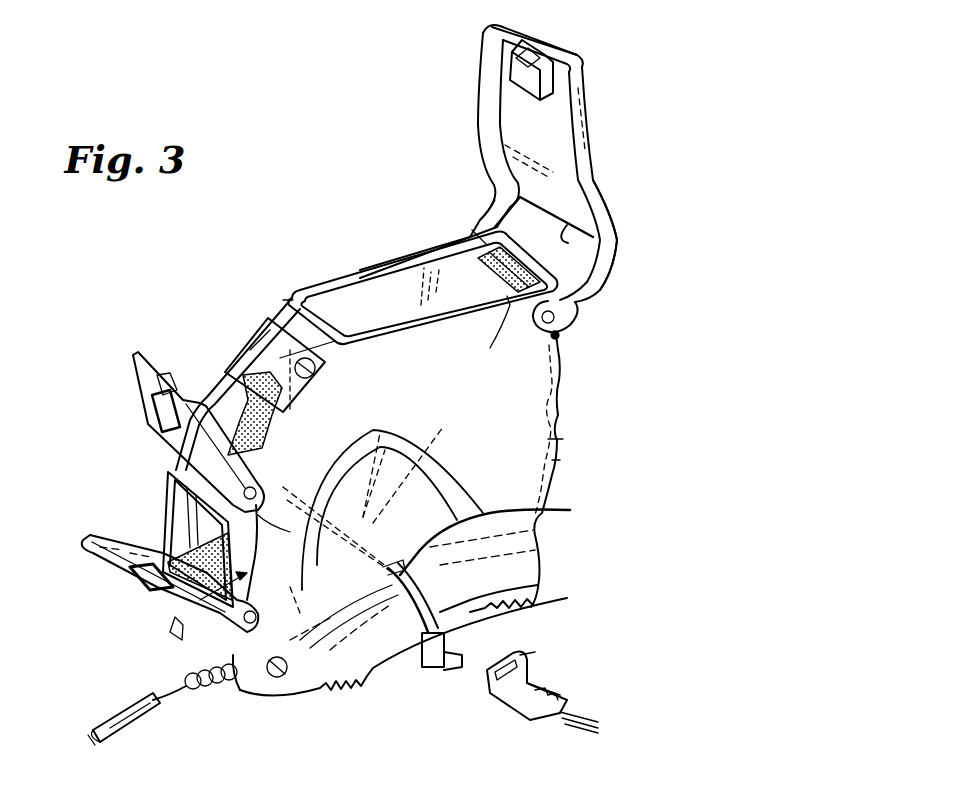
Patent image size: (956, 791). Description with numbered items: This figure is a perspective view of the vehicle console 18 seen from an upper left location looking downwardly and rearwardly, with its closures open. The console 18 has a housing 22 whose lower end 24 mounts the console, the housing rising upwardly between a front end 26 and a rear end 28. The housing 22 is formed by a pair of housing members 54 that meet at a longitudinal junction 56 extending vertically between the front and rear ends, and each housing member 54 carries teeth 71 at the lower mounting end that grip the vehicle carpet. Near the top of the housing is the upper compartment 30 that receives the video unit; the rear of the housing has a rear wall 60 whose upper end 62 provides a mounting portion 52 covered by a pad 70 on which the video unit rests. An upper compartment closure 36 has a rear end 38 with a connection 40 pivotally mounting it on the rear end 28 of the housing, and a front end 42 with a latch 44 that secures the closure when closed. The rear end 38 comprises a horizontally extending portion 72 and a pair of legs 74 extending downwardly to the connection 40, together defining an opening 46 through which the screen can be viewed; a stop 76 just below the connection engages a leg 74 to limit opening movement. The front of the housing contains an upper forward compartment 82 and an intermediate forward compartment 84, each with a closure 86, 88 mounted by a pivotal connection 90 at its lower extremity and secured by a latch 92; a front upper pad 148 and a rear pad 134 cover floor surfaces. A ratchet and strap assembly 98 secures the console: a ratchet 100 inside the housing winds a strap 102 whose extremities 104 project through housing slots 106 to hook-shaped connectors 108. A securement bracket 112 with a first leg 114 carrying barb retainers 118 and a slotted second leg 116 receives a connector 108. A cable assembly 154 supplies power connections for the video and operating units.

The vehicle console 18 is at (289, 215).
The housing 22 is at (525, 369).
The lower end 24 is at (368, 650).
The front end 26 is at (173, 613).
The rear end 28 is at (545, 443).
The upper compartment 30 is at (363, 282).
The upper compartment closure 36 is at (593, 147).
The rear end 38 is at (614, 242).
The connection 40 is at (556, 317).
The front end 42 is at (575, 60).
The latch 44 is at (523, 60).
The opening 46 is at (578, 226).
The mounting portion 52 is at (480, 262).
The housing members 54 is at (284, 296).
The longitudinal junction 56 is at (293, 308).
The rear wall 60 is at (557, 460).
The upper end 62 is at (612, 272).
The pad 70 is at (476, 334).
The teeth 71 is at (533, 603).
The horizontally extending portion 72 is at (500, 175).
The legs 74 is at (594, 283).
The stop 76 is at (560, 335).
The upper forward compartment 82 is at (253, 353).
The intermediate forward compartment 84 is at (177, 503).
The closure 86 is at (137, 397).
The closure 88 is at (157, 603).
The pivotal connection 90 is at (253, 515).
The latch 92 is at (160, 418).
The ratchet and strap assembly 98 is at (427, 467).
The ratchet 100 is at (388, 425).
The strap 102 is at (535, 540).
The extremities 104 is at (533, 573).
The housing slots 106 is at (570, 510).
The connectors 108 is at (480, 640).
The securement bracket 112 is at (490, 700).
The first leg 114 is at (563, 690).
The second leg 116 is at (530, 657).
The retainers 118 is at (600, 725).
The rear pad 134 is at (195, 557).
The front upper pad 148 is at (237, 387).
The cable assembly 154 is at (213, 694).